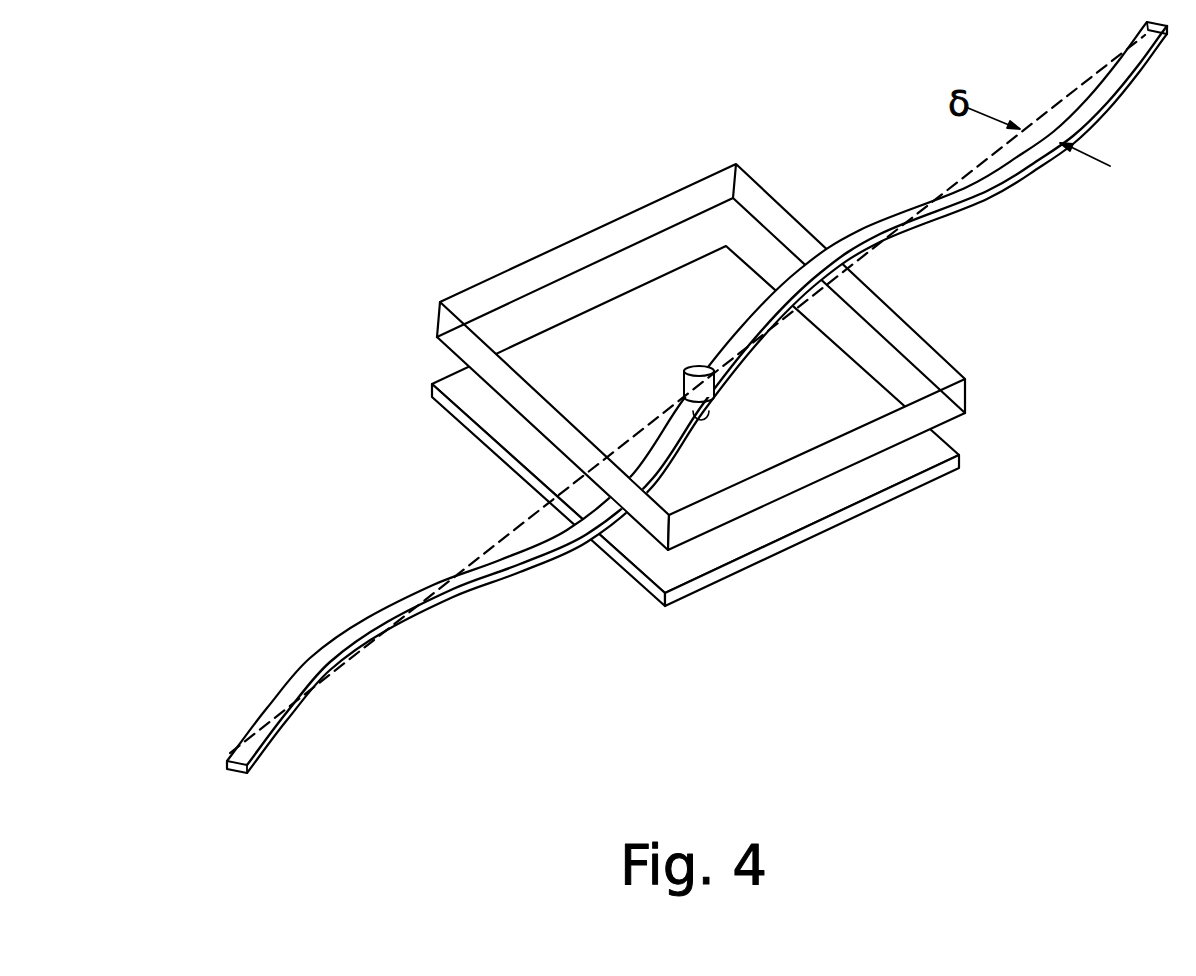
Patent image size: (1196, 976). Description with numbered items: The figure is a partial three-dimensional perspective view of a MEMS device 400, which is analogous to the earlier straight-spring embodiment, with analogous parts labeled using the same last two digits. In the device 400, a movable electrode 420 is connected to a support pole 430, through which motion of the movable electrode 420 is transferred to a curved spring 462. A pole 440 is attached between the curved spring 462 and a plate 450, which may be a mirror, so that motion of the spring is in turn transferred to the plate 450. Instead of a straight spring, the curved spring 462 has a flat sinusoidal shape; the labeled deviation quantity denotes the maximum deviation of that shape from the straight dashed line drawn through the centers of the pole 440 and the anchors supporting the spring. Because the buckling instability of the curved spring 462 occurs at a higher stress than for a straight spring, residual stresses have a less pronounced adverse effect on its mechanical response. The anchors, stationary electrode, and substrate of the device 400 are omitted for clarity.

The MEMS device 400 is at (243, 29).
The movable electrode 420 is at (953, 458).
The support pole 430 is at (700, 399).
The pole 440 is at (675, 377).
The plate (mirror) 450 is at (956, 380).
The curved spring 462 is at (536, 555).